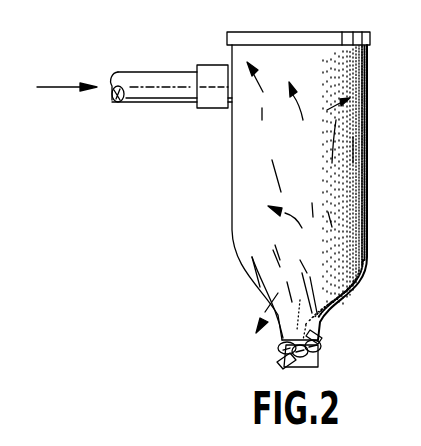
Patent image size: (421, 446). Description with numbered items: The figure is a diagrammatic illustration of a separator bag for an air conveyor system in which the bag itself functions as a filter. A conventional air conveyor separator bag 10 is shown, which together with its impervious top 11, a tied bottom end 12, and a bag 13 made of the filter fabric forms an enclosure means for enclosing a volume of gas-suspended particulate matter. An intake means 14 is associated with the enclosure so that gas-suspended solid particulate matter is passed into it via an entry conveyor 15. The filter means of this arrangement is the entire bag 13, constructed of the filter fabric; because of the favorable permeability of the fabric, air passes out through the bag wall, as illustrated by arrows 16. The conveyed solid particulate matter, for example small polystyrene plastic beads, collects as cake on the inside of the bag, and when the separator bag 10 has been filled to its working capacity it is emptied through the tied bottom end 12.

The air conveyor separator bag 10 is at (386, 158).
The impervious top 11 is at (372, 46).
The tied bottom end 12 is at (326, 344).
The bag 13 is at (369, 227).
The intake means 14 is at (213, 65).
The entry conveyor 15 is at (161, 104).
The arrows 16 is at (386, 113).